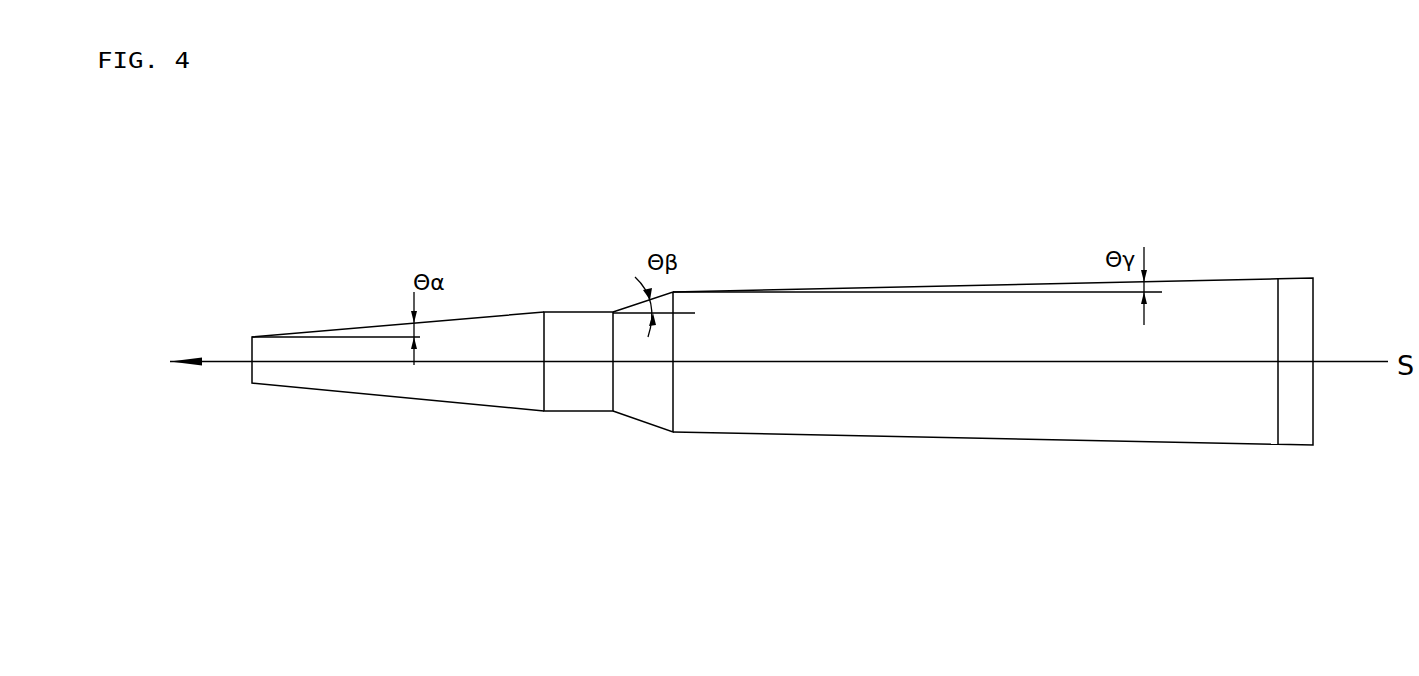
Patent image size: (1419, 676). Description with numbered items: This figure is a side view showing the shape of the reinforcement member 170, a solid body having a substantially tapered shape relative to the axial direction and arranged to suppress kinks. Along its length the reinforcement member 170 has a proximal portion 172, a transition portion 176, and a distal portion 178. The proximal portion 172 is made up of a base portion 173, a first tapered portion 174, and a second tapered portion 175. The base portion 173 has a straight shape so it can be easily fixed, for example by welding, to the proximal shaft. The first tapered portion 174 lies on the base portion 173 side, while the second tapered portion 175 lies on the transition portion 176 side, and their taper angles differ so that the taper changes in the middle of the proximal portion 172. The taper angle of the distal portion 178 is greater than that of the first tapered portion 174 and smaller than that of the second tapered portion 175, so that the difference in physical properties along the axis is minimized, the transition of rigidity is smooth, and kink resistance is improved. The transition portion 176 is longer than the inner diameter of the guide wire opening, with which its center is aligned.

The reinforcement member 170 is at (595, 153).
The proximal portion 172 is at (963, 433).
The base portion 173 is at (1197, 408).
The first tapered portion 174 is at (963, 440).
The second tapered portion 175 is at (642, 421).
The transition portion 176 is at (577, 412).
The distal portion 178 is at (392, 397).